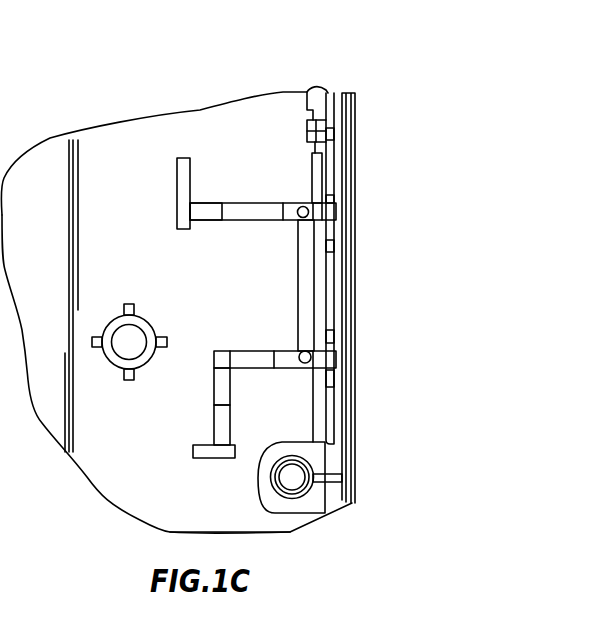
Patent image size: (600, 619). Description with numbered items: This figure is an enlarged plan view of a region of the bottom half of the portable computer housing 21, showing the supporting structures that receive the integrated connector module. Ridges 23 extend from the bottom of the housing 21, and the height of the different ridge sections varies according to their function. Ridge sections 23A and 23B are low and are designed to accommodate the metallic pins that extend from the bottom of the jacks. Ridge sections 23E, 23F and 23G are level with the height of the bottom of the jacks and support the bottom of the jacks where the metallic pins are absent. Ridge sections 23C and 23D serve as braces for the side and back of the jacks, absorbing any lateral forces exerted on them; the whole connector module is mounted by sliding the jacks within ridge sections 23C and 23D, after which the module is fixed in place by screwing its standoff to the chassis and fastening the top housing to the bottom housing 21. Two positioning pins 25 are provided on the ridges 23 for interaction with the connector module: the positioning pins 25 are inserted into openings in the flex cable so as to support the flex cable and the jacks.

The portable computer housing 21 is at (230, 118).
The ridges 23 is at (323, 210).
The ridge section 23A is at (237, 212).
The ridge section 23B is at (240, 360).
The ridge section 23C is at (183, 178).
The ridge section 23D is at (213, 458).
The ridge section 23E is at (205, 215).
The ridge section 23F is at (302, 283).
The ridge section 23G is at (222, 422).
The positioning pins 25 is at (298, 222).